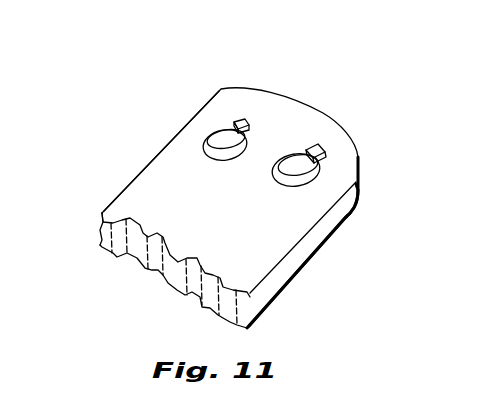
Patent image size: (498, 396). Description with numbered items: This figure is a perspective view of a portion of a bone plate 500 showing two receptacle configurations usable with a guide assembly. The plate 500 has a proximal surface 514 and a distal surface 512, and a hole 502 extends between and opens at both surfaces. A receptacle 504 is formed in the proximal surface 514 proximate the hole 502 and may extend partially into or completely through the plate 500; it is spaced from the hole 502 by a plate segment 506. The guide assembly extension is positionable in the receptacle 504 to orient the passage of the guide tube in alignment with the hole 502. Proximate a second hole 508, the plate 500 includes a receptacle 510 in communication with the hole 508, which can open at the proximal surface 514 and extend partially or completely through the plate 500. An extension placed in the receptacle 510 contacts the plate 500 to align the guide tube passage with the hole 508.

The plate 500 is at (96, 200).
The hole 502 is at (214, 140).
The receptacle 504 is at (243, 122).
The plate segment 506 is at (234, 124).
The hole 508 is at (320, 172).
The receptacle 510 is at (318, 147).
The distal surface 512 is at (300, 268).
The proximal surface 514 is at (140, 192).